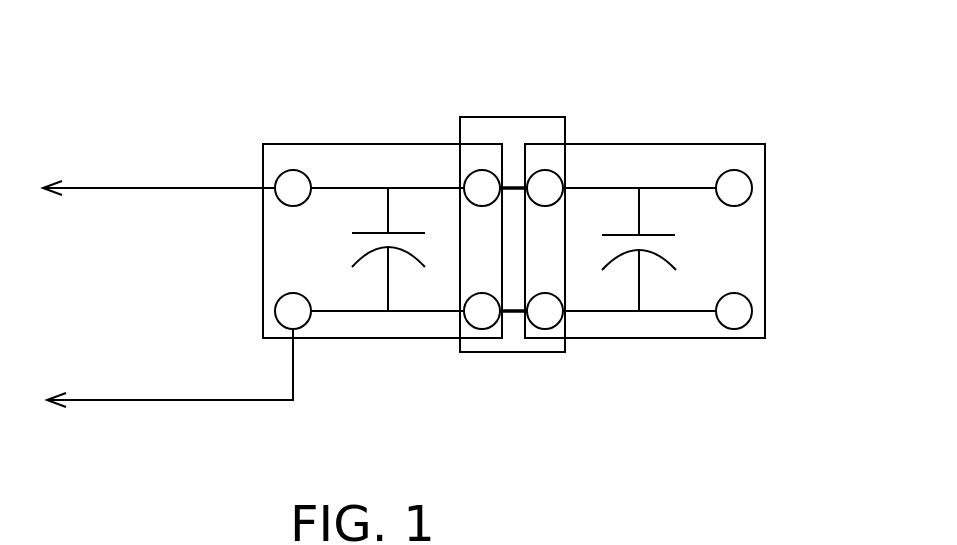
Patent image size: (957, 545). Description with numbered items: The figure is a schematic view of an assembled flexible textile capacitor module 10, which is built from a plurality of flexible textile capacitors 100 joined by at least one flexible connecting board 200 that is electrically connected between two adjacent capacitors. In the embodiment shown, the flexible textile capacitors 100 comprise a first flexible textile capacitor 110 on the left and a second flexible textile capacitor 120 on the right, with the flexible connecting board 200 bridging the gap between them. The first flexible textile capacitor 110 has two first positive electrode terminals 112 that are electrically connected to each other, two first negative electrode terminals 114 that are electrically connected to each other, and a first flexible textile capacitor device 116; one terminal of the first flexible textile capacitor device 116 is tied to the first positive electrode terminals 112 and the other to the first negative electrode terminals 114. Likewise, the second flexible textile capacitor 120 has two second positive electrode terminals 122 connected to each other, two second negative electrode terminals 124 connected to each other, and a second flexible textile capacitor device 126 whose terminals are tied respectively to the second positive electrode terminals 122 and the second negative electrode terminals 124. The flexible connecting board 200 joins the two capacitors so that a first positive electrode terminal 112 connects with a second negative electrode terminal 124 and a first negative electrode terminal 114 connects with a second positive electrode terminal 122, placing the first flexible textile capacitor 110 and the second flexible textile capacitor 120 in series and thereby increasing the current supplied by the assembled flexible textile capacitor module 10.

The assembled flexible textile capacitor module 10 is at (710, 25).
The flexible textile capacitor 100 is at (655, 8).
The first flexible textile capacitor 110 is at (418, 160).
The second flexible textile capacitor 120 is at (583, 160).
The flexible connecting board 200 is at (568, 170).
The first positive electrode terminal 112 is at (293, 170).
The first negative electrode terminal 114 is at (300, 320).
The first flexible textile capacitor device 116 is at (422, 282).
The second positive electrode terminal 122 is at (738, 172).
The second negative electrode terminal 124 is at (727, 327).
The second flexible textile capacitor device 126 is at (605, 282).